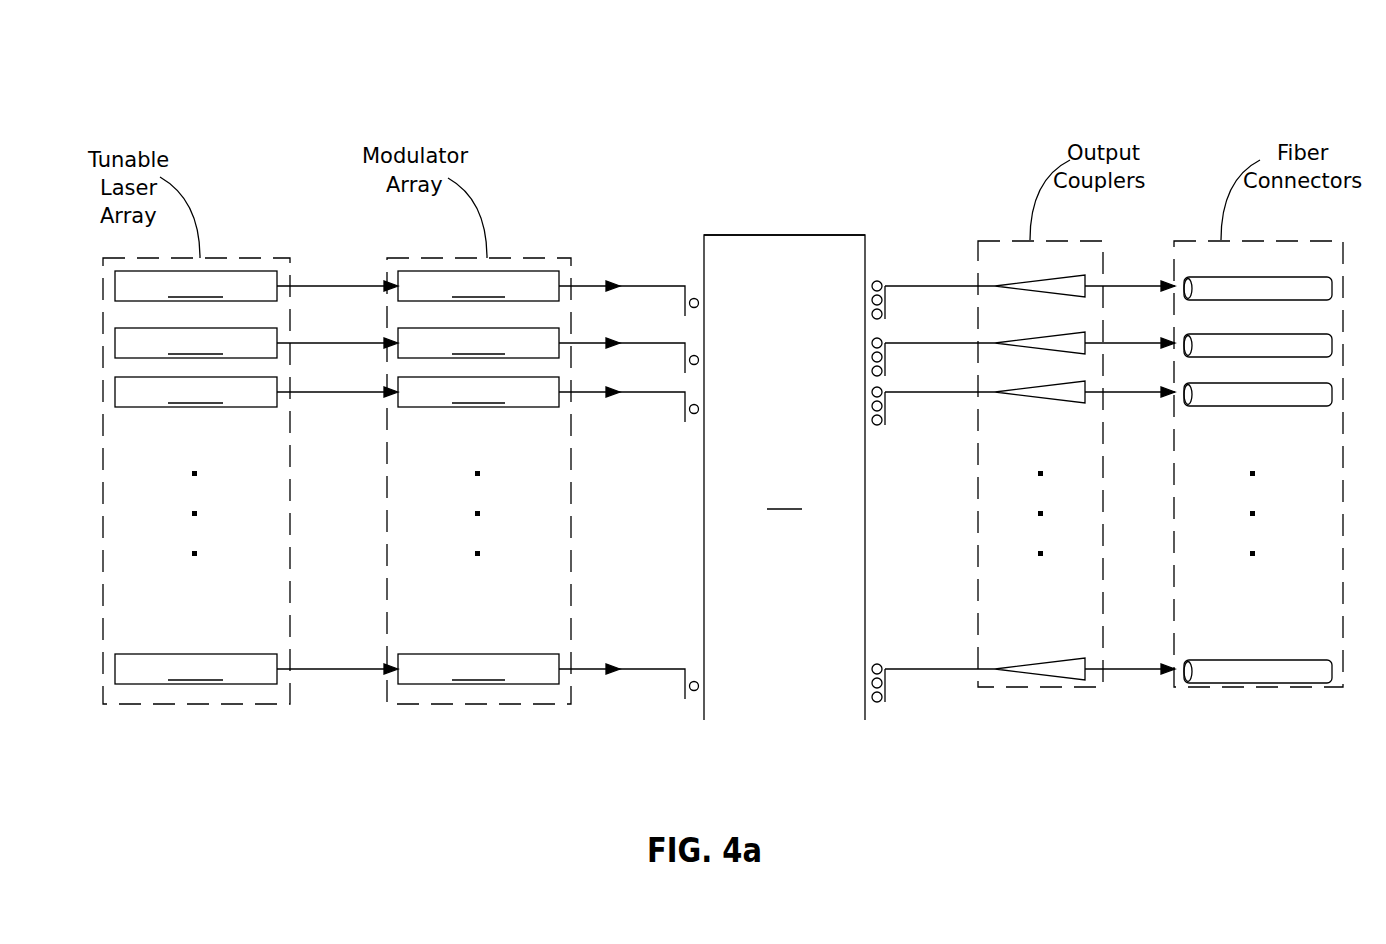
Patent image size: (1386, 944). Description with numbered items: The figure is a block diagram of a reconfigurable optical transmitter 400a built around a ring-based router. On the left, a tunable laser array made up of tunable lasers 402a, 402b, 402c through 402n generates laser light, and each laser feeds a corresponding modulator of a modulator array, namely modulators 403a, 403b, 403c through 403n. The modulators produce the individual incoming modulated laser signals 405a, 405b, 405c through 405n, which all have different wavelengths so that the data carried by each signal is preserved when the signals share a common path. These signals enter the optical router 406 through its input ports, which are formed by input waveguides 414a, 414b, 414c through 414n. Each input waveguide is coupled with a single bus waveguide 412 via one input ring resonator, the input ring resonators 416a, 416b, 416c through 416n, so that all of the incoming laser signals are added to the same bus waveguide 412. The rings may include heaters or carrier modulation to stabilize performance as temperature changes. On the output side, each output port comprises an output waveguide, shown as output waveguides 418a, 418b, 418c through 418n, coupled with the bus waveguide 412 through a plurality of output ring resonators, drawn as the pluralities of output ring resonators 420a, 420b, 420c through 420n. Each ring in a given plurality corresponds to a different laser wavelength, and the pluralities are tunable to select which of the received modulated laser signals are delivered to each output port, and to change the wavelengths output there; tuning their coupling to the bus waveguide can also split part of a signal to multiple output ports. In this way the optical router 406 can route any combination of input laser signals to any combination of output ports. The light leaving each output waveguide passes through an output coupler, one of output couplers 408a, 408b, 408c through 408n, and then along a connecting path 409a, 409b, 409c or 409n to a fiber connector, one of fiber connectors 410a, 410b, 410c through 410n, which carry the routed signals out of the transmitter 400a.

The optical transmitter 400a is at (792, 103).
The tunable laser 402a is at (196, 286).
The tunable laser 402b is at (196, 343).
The tunable laser 402c is at (196, 392).
The tunable laser 402n is at (196, 669).
The modulator 403a is at (377, 285).
The modulator 403b is at (377, 342).
The modulator 403c is at (377, 391).
The modulator 403n is at (377, 668).
The laser signal 405a is at (602, 283).
The laser signal 405b is at (602, 340).
The laser signal 405c is at (602, 389).
The laser signal 405n is at (599, 651).
The optical router 406 is at (784, 477).
The output coupler 408a is at (1000, 284).
The output coupler 408b is at (1000, 341).
The output coupler 408c is at (1000, 390).
The output coupler 408n is at (1000, 667).
The coupler output fiber 409a is at (1108, 286).
The coupler output fiber 409b is at (1108, 343).
The coupler output fiber 409c is at (1108, 392).
The coupler output fiber 409n is at (1108, 669).
The fiber connector 410a is at (1240, 277).
The fiber connector 410b is at (1240, 334).
The fiber connector 410c is at (1240, 383).
The fiber connector 410n is at (1240, 660).
The bus waveguide 412 is at (752, 235).
The input waveguide 414a is at (640, 286).
The input waveguide 414b is at (640, 343).
The input waveguide 414c is at (662, 366).
The input waveguide 414n is at (640, 669).
The input ring resonator 416a is at (695, 299).
The input ring resonator 416b is at (695, 356).
The input ring resonator 416c is at (695, 405).
The input ring resonator 416n is at (695, 682).
The output waveguide 418a is at (893, 286).
The output waveguide 418b is at (893, 343).
The output waveguide 418c is at (893, 392).
The output waveguide 418n is at (893, 669).
The plurality of output ring resonators 420a is at (866, 288).
The plurality of output ring resonators 420b is at (866, 345).
The plurality of output ring resonators 420c is at (866, 394).
The plurality of output ring resonators 420n is at (866, 671).